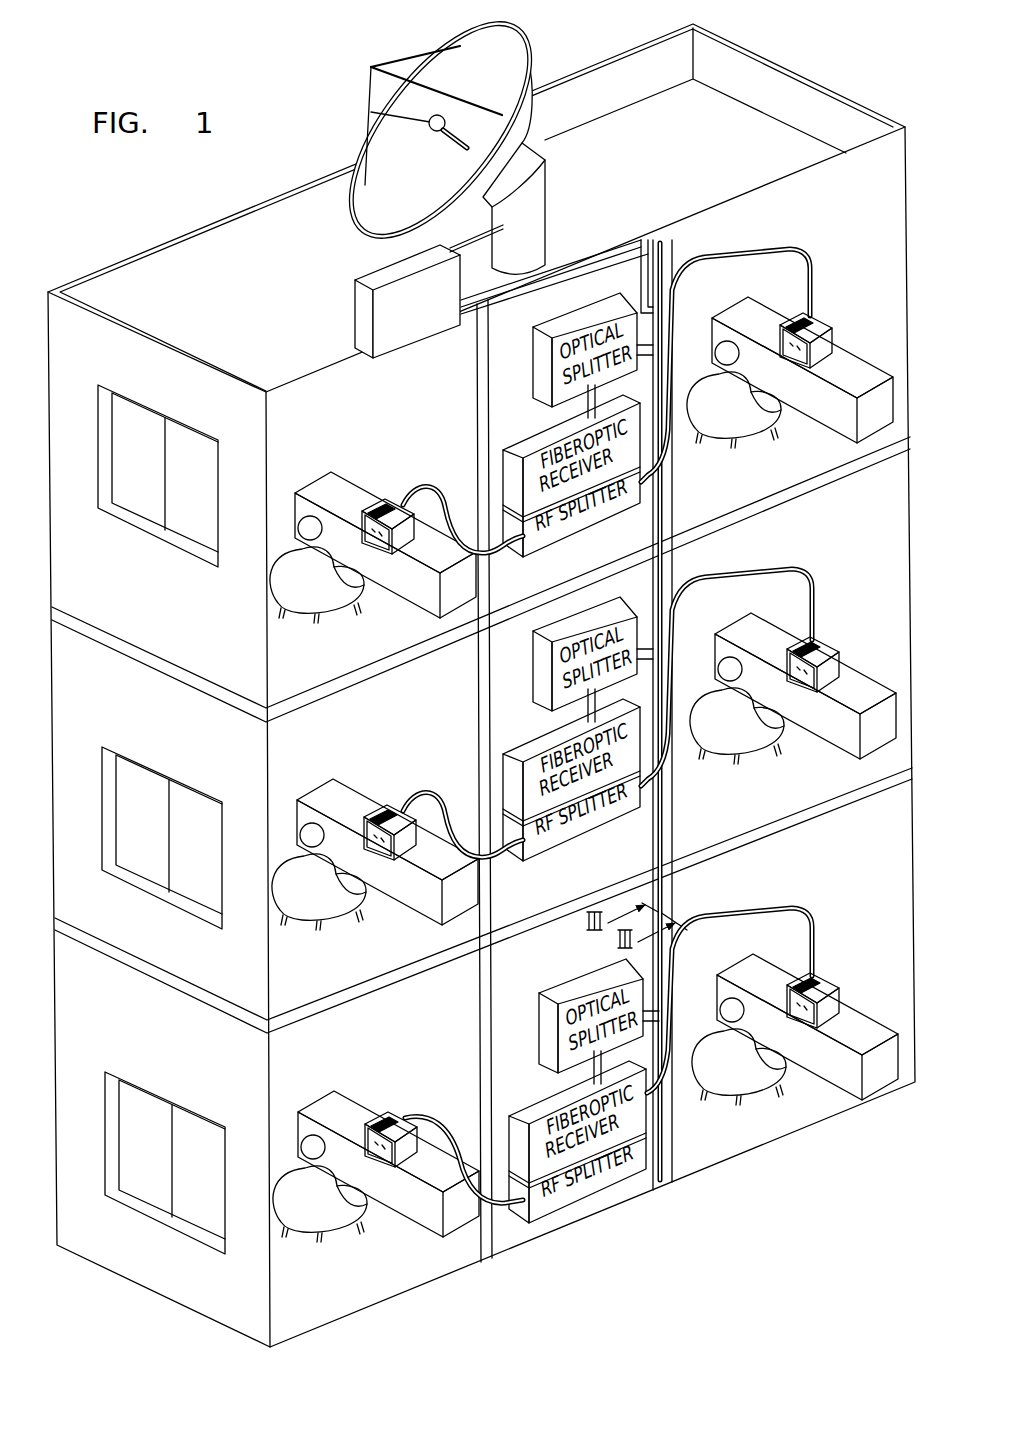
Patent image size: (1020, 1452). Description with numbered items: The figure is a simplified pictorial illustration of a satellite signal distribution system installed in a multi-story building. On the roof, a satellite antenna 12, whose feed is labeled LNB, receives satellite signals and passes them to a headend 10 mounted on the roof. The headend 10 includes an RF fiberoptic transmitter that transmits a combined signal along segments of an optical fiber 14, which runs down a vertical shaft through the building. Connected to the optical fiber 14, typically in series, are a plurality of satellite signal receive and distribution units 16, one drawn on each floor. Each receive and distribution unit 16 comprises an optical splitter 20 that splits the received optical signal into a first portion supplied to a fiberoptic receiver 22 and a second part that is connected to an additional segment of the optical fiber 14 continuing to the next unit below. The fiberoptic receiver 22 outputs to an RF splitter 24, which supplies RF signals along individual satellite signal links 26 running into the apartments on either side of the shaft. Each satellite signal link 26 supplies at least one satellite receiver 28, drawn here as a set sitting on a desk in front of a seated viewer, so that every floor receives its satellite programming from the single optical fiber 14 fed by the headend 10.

The headend 10 is at (357, 302).
The satellite antenna 12 is at (388, 158).
The optical fiber 14 is at (640, 300).
The satellite signal receive and distribution unit 16 is at (522, 413).
The optical splitter 20 is at (535, 343).
The fiberoptic receiver 22 is at (505, 463).
The RF splitter 24 is at (532, 548).
The satellite signal link 26 is at (416, 492).
The satellite receiver 28 is at (385, 500).
The low noise block converter LNB is at (372, 112).